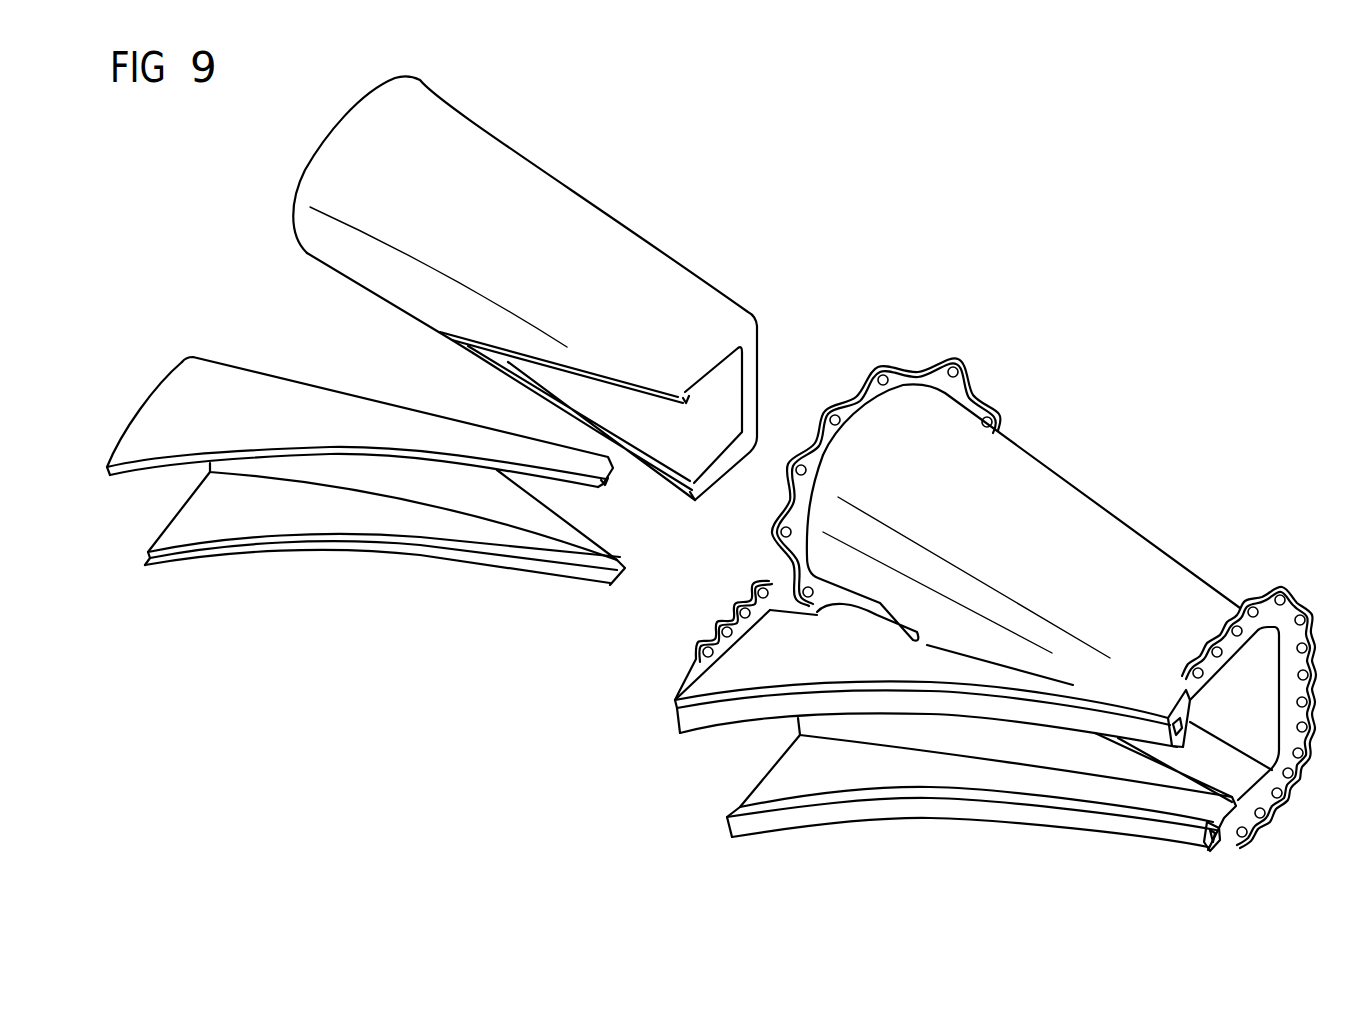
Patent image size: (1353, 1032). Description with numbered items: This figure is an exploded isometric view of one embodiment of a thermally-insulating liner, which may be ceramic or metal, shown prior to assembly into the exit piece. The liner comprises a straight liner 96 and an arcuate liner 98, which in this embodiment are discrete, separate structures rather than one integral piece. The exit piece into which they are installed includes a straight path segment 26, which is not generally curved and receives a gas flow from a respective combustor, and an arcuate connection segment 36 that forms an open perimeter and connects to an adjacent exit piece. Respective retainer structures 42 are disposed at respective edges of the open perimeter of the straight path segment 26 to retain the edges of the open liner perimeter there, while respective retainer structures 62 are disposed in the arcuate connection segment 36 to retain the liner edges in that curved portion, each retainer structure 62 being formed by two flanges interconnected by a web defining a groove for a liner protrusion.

The straight path segment 26 is at (1057, 513).
The arcuate connection segment 36 is at (800, 770).
The retainer structures 42 is at (1202, 703).
The retainer structures 62 is at (1173, 707).
The straight liner 96 is at (568, 225).
The arcuate liner 98 is at (270, 395).